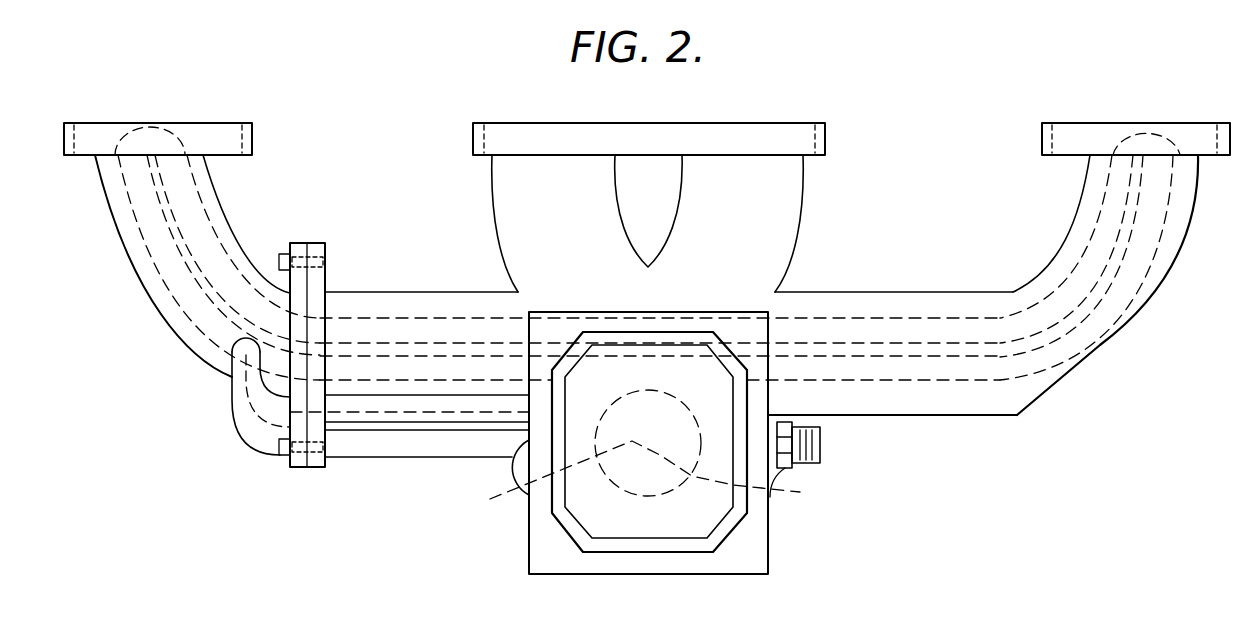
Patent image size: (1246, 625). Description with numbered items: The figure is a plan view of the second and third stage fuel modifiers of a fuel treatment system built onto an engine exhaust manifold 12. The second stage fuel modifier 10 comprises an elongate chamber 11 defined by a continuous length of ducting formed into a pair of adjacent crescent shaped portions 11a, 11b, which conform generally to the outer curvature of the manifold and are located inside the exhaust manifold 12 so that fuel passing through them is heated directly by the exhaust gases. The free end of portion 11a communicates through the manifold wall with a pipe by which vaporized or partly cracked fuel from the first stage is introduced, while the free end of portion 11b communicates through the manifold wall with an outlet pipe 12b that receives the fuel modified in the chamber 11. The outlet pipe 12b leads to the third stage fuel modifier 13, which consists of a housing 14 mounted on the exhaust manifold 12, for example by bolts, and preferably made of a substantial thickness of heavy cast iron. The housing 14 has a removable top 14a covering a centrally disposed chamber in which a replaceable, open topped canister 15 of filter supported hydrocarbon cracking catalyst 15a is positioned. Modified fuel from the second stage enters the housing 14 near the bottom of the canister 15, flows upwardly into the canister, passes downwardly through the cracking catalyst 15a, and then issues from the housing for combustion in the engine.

The second stage fuel modifier 10 is at (868, 295).
The elongate chamber 11 is at (928, 318).
The crescent shaped portion 11a is at (365, 373).
The crescent shaped portion 11b is at (388, 332).
The exhaust manifold 12 is at (980, 417).
The outlet pipe 12b is at (445, 418).
The third stage fuel modifier 13 is at (664, 443).
The housing 14 is at (753, 559).
The removable top 14a is at (690, 535).
The canister 15 is at (780, 492).
The hydrocarbon cracking catalyst 15a is at (523, 493).